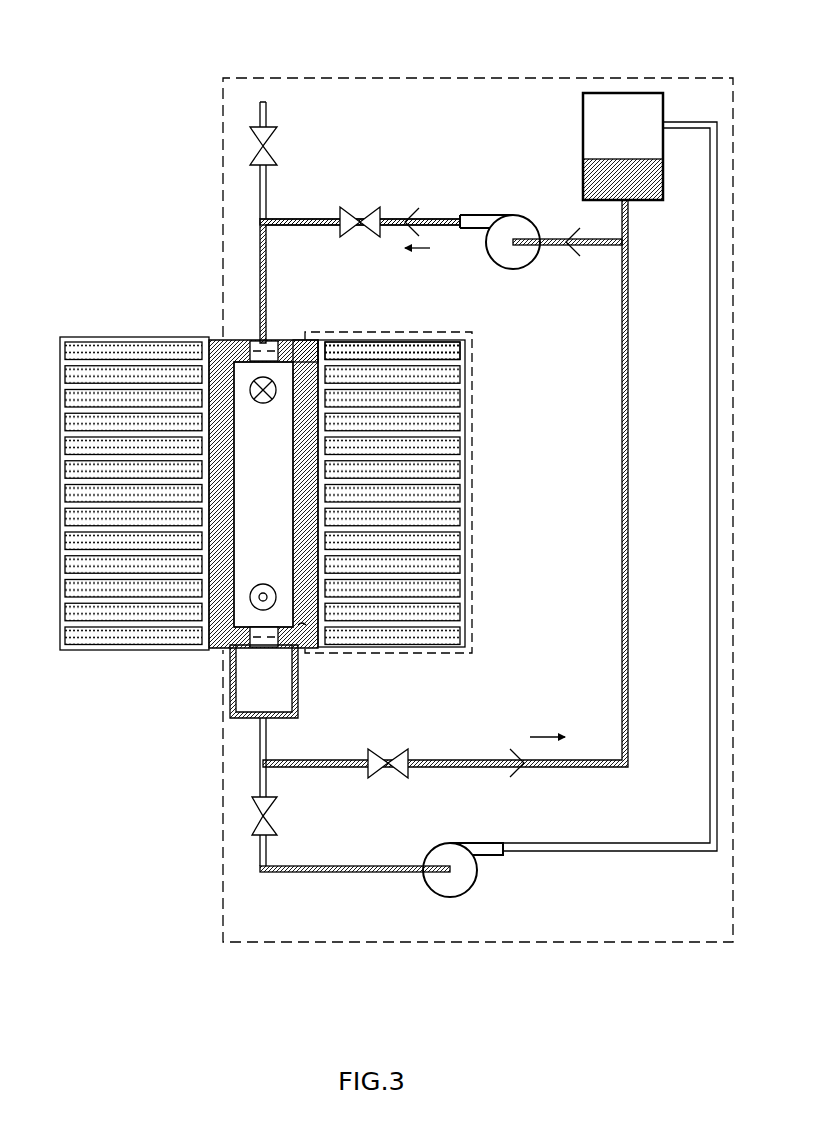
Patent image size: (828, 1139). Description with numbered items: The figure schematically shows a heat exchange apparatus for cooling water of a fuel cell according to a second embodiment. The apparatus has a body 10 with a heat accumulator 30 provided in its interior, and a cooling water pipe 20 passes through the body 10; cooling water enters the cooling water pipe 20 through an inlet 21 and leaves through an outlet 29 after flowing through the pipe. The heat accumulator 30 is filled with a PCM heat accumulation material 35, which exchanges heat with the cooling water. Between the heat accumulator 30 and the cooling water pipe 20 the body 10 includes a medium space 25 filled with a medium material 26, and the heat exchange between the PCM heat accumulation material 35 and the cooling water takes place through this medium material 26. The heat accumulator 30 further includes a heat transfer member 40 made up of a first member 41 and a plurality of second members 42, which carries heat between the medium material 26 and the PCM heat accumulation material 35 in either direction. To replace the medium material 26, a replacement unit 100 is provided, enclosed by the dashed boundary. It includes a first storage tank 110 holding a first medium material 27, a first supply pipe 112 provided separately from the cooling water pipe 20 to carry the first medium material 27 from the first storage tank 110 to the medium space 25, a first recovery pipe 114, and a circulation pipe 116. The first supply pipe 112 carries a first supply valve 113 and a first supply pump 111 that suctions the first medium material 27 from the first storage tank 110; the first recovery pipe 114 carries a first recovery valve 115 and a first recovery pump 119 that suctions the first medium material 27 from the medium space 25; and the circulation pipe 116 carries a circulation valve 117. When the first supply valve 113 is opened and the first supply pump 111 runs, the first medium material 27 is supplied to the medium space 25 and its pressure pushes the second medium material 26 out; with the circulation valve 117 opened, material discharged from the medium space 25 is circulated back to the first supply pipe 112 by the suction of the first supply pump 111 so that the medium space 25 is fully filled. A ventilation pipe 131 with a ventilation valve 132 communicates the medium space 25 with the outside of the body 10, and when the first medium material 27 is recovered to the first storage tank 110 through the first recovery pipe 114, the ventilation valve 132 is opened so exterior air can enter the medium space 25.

The body 10 is at (63, 302).
The cooling water pipe 20 is at (265, 515).
The inlet 21 is at (256, 390).
The medium space 25 is at (304, 627).
The medium material 26 is at (222, 630).
The first medium material 27 is at (595, 176).
The outlet 29 is at (250, 597).
The heat accumulator 30 is at (212, 354).
The PCM heat accumulation material 35 is at (455, 397).
The heat transfer member 40 is at (433, 298).
The first member 41 is at (323, 353).
The second members 42 is at (432, 360).
The replacement unit 100 is at (430, 64).
The first storage tank 110 is at (595, 124).
The first supply pump 111 is at (506, 228).
The first supply pipe 112 is at (438, 219).
The first supply valve 113 is at (368, 210).
The first recovery pipe 114 is at (607, 852).
The first recovery valve 115 is at (277, 824).
The circulation pipe 116 is at (628, 712).
The circulation valve 117 is at (393, 752).
The first recovery pump 119 is at (452, 880).
The ventilation pipe 131 is at (267, 117).
The ventilation valve 132 is at (277, 152).